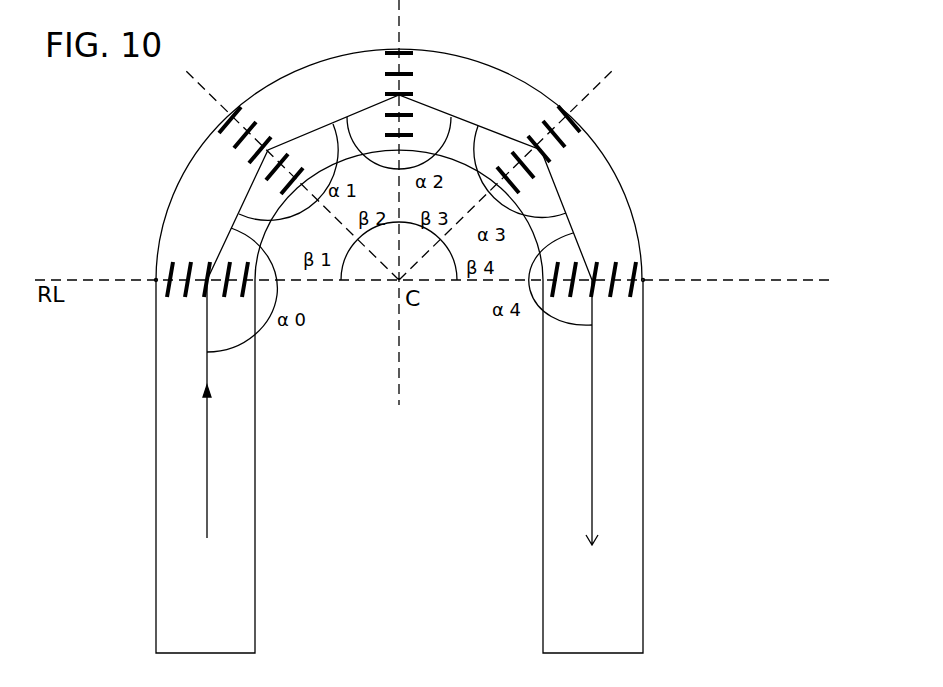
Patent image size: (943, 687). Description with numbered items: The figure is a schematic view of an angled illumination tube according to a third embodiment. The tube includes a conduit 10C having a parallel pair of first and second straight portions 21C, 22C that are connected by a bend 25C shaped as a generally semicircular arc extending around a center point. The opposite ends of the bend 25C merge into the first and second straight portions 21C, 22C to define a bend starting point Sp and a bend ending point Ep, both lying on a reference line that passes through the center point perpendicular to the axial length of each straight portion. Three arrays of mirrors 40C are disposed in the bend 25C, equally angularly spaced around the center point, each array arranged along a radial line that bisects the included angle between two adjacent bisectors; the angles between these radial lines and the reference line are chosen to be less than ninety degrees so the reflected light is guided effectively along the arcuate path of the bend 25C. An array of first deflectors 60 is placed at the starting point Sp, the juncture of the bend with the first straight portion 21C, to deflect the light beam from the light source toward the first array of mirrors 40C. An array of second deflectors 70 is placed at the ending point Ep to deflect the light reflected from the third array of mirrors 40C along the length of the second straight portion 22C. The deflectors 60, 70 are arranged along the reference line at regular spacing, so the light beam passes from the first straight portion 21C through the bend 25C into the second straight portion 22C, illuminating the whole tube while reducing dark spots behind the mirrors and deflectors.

The conduit 10C is at (156, 412).
The first straight portion 21C is at (155, 473).
The second straight portion 22C is at (643, 477).
The bend 25C is at (487, 62).
The mirrors 40C is at (258, 128).
The first deflectors 60 is at (182, 268).
The second deflector 70 is at (640, 292).
The bend starting point Sp is at (156, 278).
The bend ending point Ep is at (647, 280).